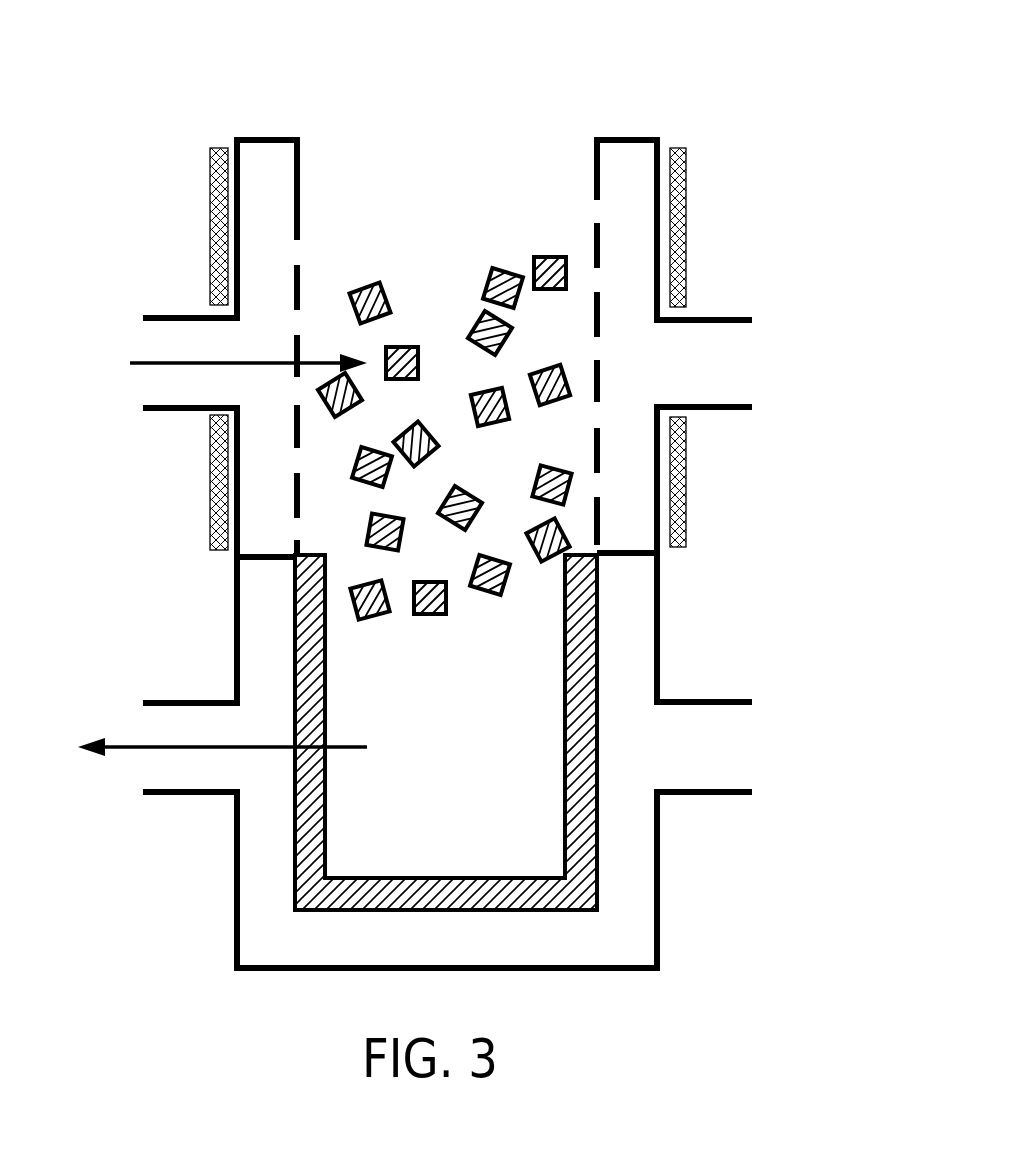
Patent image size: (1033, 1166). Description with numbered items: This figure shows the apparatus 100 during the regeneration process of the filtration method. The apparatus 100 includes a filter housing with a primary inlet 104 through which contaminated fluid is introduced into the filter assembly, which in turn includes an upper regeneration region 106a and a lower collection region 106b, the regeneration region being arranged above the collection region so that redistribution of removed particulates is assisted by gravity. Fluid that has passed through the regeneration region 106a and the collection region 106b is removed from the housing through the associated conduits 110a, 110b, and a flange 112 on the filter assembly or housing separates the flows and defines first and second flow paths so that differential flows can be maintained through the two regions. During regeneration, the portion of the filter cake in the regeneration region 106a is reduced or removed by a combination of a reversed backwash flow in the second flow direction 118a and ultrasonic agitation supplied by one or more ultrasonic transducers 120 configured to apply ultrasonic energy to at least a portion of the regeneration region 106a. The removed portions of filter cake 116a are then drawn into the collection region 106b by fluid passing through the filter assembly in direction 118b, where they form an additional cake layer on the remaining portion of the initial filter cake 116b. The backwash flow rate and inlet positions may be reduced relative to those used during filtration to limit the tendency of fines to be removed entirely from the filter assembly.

The apparatus 100 is at (780, 46).
The primary inlet 104 is at (537, 155).
The regeneration region 106a is at (293, 270).
The collection region 106b is at (293, 713).
The conduit 110a is at (687, 333).
The conduit 110b is at (708, 720).
The flange 112 is at (623, 553).
The removed portion of filter cake 116a is at (330, 373).
The remaining portion of initial filter cake 116b is at (308, 672).
The second flow direction 118a is at (182, 363).
The flow direction 118b is at (180, 747).
The ultrasonic transducer 120 is at (683, 208).